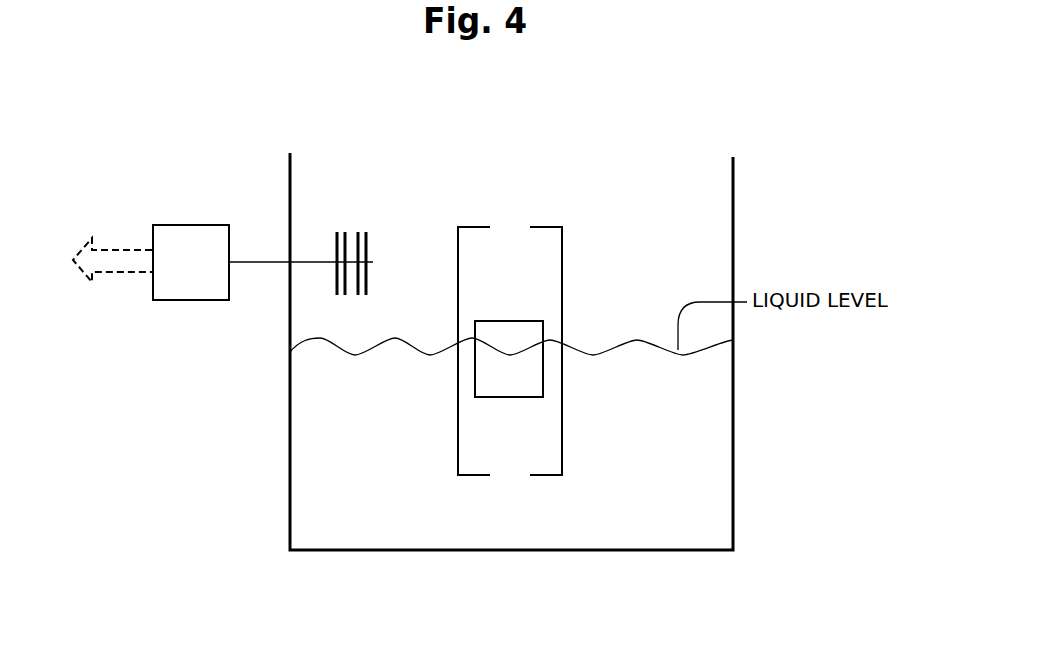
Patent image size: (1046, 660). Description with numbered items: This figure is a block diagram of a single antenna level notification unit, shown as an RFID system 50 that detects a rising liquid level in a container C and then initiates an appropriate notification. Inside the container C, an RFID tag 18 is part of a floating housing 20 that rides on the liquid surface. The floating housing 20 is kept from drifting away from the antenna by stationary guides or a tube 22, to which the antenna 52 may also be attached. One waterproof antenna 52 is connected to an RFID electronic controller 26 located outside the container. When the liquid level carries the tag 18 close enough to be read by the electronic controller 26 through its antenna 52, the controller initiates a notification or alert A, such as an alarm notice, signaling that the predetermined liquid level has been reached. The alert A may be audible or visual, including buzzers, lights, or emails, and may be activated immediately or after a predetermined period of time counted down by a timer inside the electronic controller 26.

The RFID system 50 is at (735, 115).
The RFID electronic controller 26 is at (153, 237).
The notification or alert A is at (118, 273).
The waterproof antenna 52 is at (365, 238).
The RFID tag 18 is at (522, 333).
The floating housing 20 is at (528, 397).
The stationary guides or tube 22 is at (573, 452).
The container C is at (733, 453).